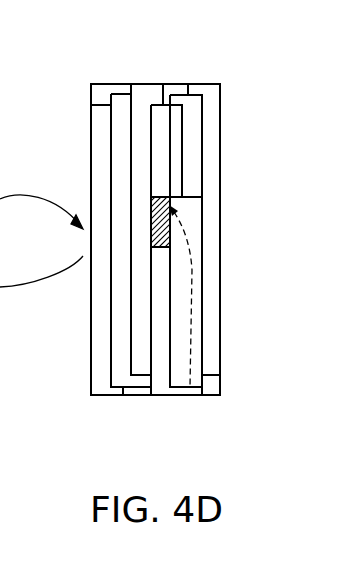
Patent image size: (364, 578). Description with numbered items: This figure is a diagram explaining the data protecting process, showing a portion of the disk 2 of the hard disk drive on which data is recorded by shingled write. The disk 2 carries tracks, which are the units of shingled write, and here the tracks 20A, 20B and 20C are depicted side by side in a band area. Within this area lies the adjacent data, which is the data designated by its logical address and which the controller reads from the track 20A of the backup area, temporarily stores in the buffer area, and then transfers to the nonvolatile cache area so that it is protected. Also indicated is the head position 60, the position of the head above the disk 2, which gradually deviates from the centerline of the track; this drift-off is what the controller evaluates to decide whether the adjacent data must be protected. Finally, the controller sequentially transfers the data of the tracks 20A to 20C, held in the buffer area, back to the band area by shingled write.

The disk 2 is at (182, 84).
The track 20A is at (163, 393).
The track 20B is at (195, 390).
The track 20C is at (212, 377).
The head position 60 is at (194, 287).